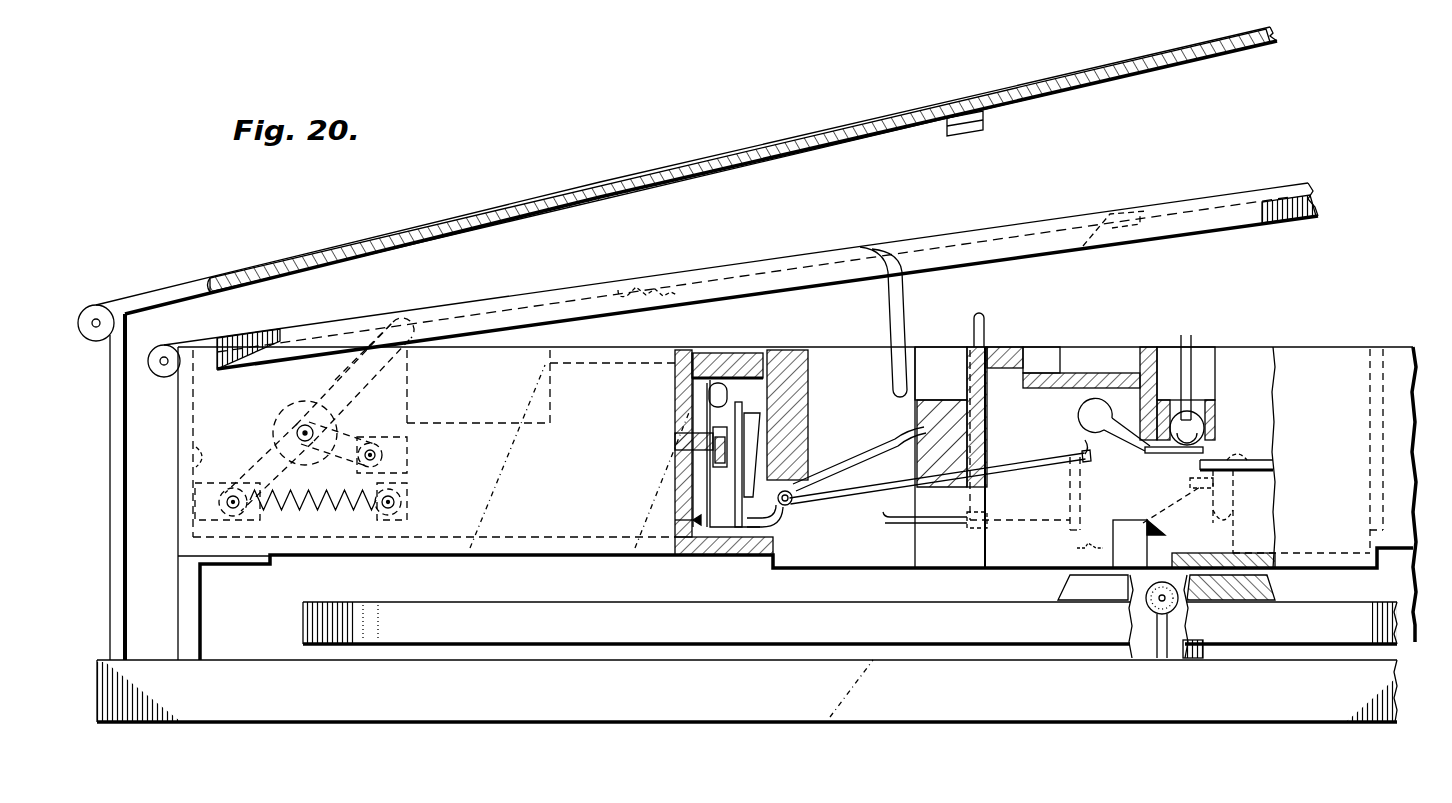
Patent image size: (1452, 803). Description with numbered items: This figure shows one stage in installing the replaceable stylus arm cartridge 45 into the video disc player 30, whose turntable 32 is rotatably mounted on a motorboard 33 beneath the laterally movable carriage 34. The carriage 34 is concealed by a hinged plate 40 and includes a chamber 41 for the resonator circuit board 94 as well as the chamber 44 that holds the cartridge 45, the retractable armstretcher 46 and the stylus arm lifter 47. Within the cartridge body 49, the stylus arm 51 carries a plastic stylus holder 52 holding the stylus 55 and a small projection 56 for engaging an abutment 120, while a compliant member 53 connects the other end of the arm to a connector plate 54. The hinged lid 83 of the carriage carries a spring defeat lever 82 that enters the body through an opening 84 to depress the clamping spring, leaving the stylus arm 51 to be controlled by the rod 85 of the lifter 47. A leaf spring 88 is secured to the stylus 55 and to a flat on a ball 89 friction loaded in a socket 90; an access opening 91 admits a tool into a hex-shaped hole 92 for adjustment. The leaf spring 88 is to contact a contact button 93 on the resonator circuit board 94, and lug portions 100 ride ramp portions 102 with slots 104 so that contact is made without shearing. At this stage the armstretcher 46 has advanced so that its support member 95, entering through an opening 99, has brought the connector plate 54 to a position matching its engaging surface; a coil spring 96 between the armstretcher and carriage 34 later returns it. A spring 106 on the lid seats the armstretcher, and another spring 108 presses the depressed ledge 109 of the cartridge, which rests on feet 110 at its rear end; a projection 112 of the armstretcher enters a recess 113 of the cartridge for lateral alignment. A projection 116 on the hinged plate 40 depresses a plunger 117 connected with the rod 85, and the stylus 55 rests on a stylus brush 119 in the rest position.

The video disc player 30 is at (1422, 310).
The turntable 32 is at (303, 620).
The motorboard 33 is at (160, 673).
The carriage 34 is at (165, 489).
The hinged plate 40 is at (360, 256).
The chamber 41 is at (1327, 347).
The chamber 44 is at (372, 523).
The stylus arm cartridge 45 is at (1135, 310).
The armstretcher 46 is at (543, 518).
The stylus arm lifter 47 is at (1075, 458).
The cartridge body 49 is at (777, 347).
The stylus arm 51 is at (1037, 473).
The stylus holder 52 is at (1123, 468).
The compliant member 53 is at (753, 507).
The connector plate 54 is at (727, 500).
The stylus 55 is at (1143, 464).
The projection 56 is at (1087, 445).
The spring defeat lever 82 is at (900, 305).
The hinged lid 83 is at (1028, 252).
The opening 84 is at (842, 350).
The rod 85 is at (950, 524).
The leaf spring 88 is at (1082, 400).
The ball 89 is at (1206, 420).
The socket 90 is at (1213, 398).
The access opening 91 is at (1180, 347).
The hex-shaped hole 92 is at (1190, 347).
The contact button 93 is at (1250, 458).
The resonator circuit board 94 is at (1268, 472).
The support member 95 is at (707, 383).
The coil spring 96 is at (323, 513).
The opening 99 is at (703, 425).
The lug portion 100 is at (1192, 485).
The ramp portion 102 is at (1208, 560).
The slot 104 is at (1230, 503).
The spring 106 is at (623, 296).
The spring 108 is at (1087, 233).
The depressed ledge 109 is at (1058, 346).
The foot 110 is at (677, 522).
The projection 112 is at (700, 345).
The recess 113 is at (758, 345).
The projection 116 is at (980, 130).
The plunger 117 is at (973, 332).
The stylus brush 119 is at (1170, 658).
The abutment 120 is at (1127, 550).